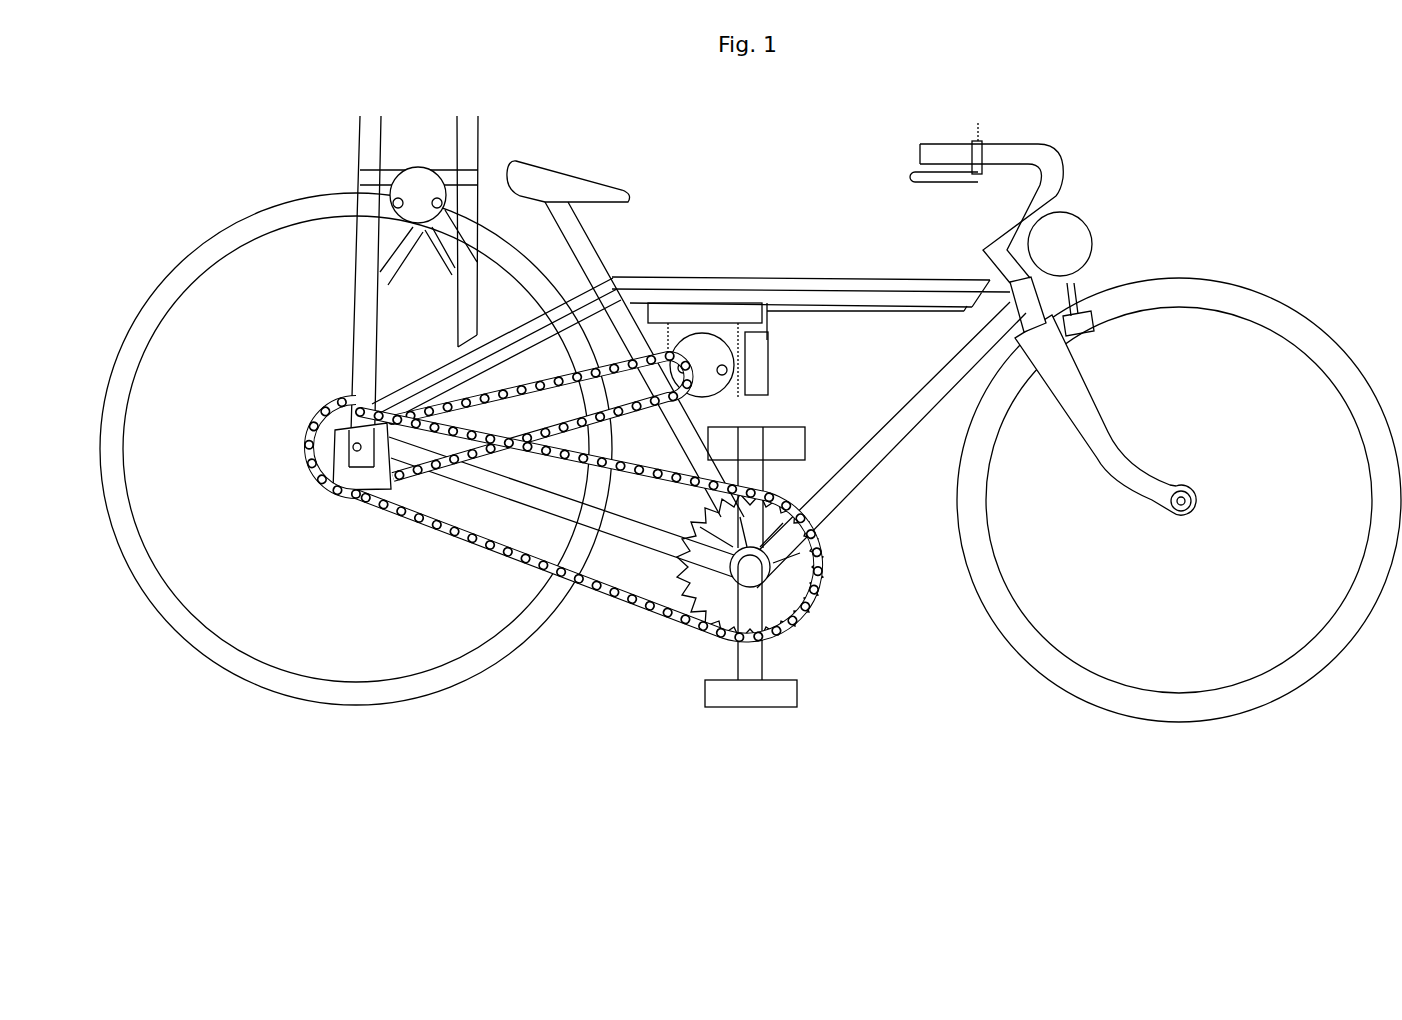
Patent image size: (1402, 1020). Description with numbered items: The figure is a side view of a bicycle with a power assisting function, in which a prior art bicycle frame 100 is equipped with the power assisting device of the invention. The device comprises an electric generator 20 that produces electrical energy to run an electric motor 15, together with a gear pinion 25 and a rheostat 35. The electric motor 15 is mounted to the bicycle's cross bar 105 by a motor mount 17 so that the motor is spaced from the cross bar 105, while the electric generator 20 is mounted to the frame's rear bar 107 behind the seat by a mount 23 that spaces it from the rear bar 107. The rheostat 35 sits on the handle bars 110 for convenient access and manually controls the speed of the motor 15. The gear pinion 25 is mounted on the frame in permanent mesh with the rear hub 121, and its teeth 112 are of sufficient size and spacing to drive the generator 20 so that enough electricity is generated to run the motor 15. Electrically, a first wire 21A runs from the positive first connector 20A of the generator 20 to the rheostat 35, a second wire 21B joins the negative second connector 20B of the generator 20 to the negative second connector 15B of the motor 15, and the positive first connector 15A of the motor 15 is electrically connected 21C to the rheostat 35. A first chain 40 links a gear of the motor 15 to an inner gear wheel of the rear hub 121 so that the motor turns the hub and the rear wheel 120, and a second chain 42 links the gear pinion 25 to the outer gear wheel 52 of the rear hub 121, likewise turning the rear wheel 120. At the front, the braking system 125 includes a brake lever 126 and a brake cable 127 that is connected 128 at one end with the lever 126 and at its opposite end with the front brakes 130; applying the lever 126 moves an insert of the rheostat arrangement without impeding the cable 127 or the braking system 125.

The electric motor 15 is at (715, 388).
The first connector (positive) of the motor 15A is at (728, 369).
The second connector (negative) of the motor 15B is at (686, 374).
The motor mount 17 is at (768, 330).
The electric generator 20 is at (418, 172).
The first connector (positive) of the generator 20A is at (443, 203).
The second connector (negative) of the generator 20B is at (395, 202).
The first wire 21A is at (478, 292).
The second wire 21B is at (383, 289).
The electrical connection 21C is at (803, 311).
The mount 23 is at (362, 140).
The gear pinion 25 is at (792, 572).
The rheostat 35 is at (983, 141).
The first band or chain 40 is at (541, 392).
The second band or chain 42 is at (586, 597).
The outer gear wheel 52 is at (322, 430).
The bicycle frame 100 is at (912, 394).
The cross bar 105 is at (858, 296).
The rear bar 107 is at (428, 402).
The handle bars 110 is at (1058, 175).
The teeth 112 is at (680, 568).
The rear wheel 120 is at (278, 217).
The rear hub 121 is at (322, 458).
The front braking system 125 is at (1097, 261).
The brake lever 126 is at (948, 182).
The brake cable 127 is at (1086, 215).
The connection of brake cable to lever 128 is at (982, 170).
The front brakes 130 is at (1076, 298).